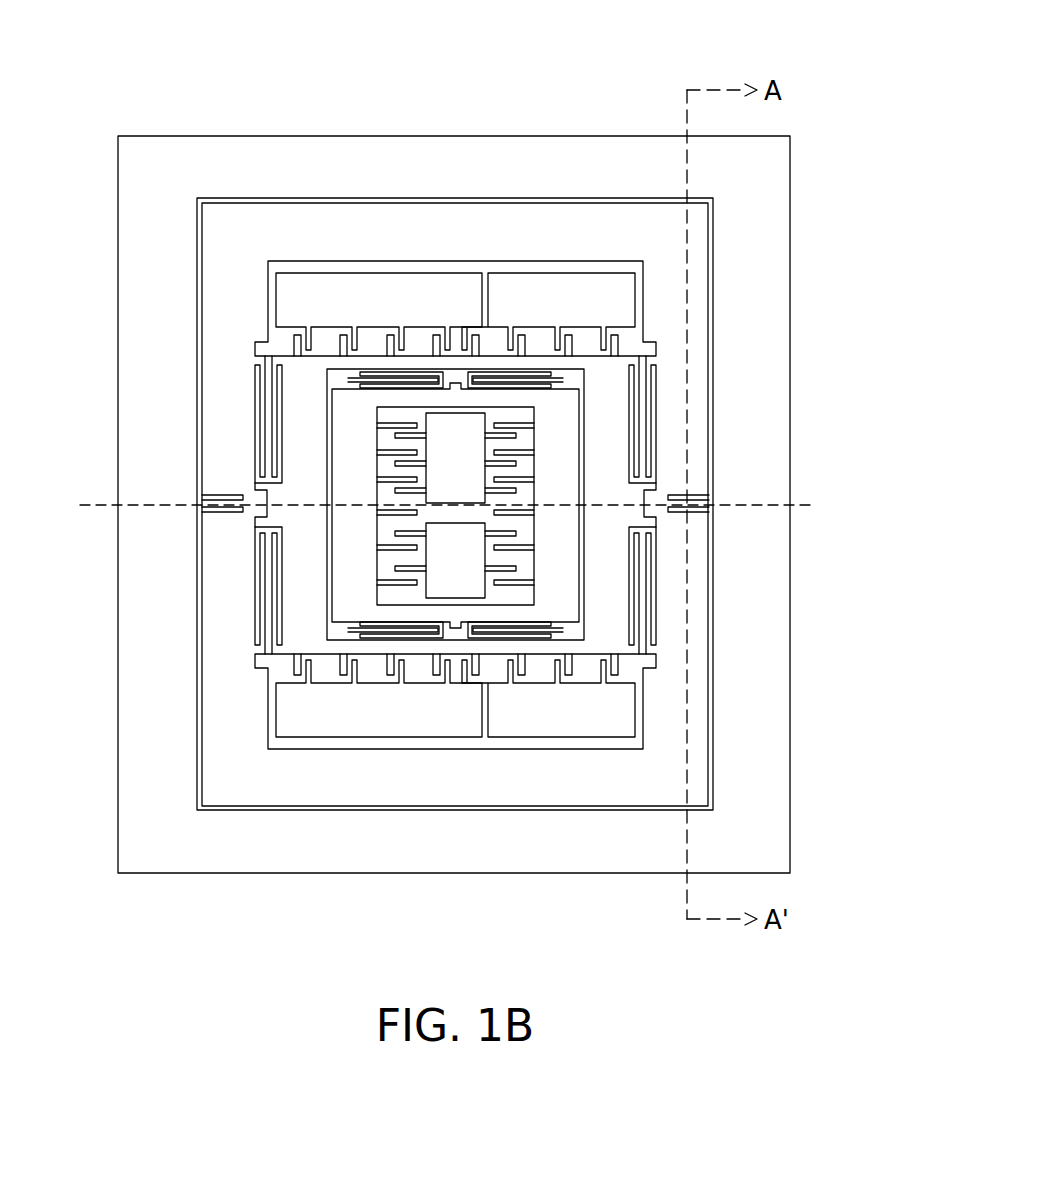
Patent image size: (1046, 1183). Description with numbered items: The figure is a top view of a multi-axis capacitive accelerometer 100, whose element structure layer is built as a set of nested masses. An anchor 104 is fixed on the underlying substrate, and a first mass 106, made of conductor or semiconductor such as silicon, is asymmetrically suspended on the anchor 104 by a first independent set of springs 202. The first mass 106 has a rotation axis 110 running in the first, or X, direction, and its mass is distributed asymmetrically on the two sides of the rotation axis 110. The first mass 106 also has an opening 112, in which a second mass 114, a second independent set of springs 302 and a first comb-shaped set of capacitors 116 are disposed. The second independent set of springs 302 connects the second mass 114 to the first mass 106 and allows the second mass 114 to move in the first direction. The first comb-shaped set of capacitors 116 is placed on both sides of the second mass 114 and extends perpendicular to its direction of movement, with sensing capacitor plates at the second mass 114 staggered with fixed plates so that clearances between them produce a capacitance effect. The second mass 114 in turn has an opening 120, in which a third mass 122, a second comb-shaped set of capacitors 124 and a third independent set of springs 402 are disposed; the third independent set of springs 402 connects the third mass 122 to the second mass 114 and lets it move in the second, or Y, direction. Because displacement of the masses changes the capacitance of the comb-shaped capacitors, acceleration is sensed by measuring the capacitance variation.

The multi-axis capacitive accelerometer 100 is at (116, 102).
The anchor 104 is at (762, 298).
The first mass 106 is at (700, 220).
The rotation axis 110 is at (92, 504).
The opening 112 is at (623, 748).
The second mass 114 is at (614, 458).
The first comb-shaped set of capacitors 116 is at (559, 322).
The opening 120 is at (337, 631).
The third mass 122 is at (566, 540).
The second comb-shaped set of capacitors 124 is at (393, 435).
The first independent set of springs 202 is at (238, 509).
The second independent set of springs 302 is at (258, 392).
The third independent set of springs 402 is at (414, 376).